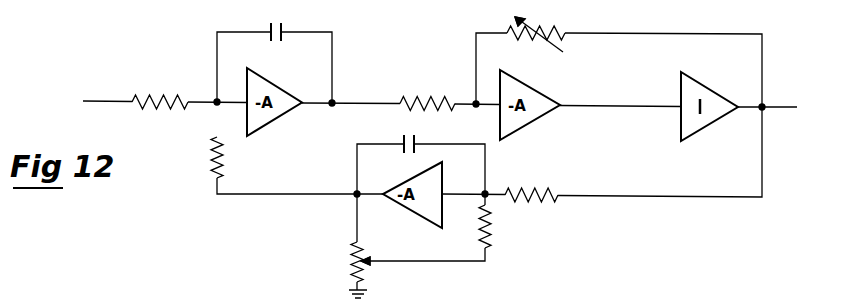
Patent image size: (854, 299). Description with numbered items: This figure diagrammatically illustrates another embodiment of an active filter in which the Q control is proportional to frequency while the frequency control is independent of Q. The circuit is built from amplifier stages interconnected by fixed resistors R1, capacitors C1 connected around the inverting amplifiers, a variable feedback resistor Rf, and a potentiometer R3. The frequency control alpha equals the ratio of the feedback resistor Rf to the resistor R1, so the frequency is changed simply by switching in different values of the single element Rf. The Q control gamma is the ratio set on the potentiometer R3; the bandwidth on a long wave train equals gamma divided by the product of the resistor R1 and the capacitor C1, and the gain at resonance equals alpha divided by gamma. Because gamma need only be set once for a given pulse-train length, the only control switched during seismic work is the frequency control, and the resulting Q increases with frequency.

The resistor R1 is at (345, 159).
The capacitor C1 is at (355, 78).
The feedback resistor Rf is at (536, 29).
The potentiometer R3 is at (343, 262).